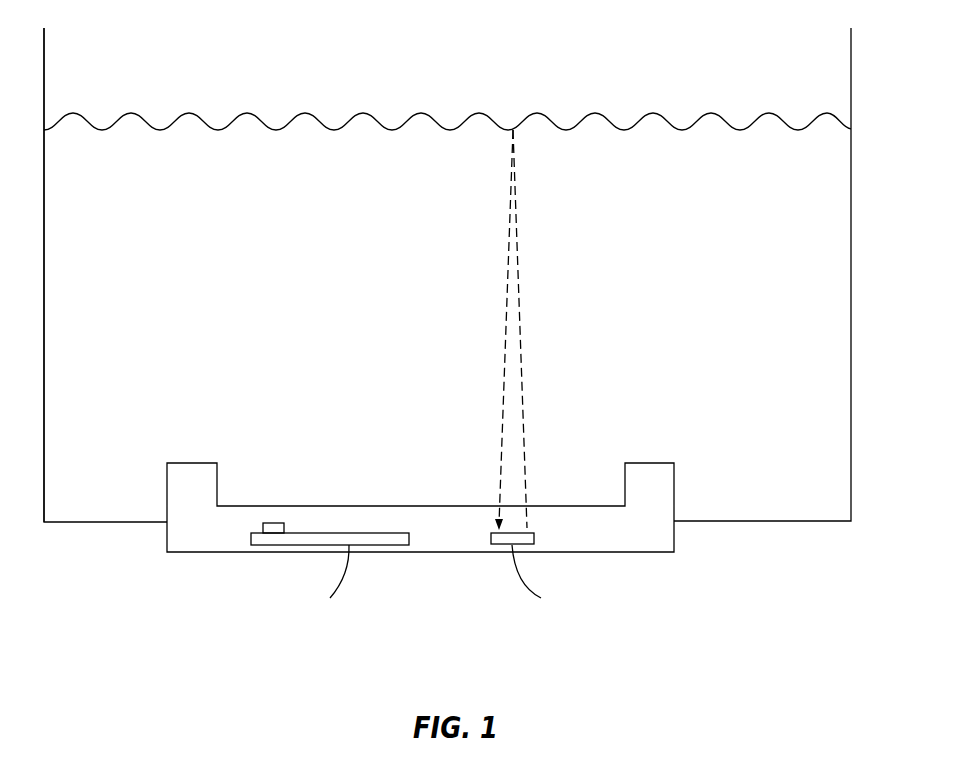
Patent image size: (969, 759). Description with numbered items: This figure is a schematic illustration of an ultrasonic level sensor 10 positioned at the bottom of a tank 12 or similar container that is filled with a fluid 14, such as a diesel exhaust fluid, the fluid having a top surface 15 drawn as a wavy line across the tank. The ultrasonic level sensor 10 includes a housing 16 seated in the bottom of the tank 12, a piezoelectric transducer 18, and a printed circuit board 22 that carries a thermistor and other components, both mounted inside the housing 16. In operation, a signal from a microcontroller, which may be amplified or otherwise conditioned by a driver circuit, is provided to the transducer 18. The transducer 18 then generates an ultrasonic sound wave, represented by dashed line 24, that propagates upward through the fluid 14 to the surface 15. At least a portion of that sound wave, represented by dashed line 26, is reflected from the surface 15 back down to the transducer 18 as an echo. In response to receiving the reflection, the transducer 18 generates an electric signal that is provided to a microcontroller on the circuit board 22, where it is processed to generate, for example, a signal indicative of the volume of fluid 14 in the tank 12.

The ultrasonic level sensor 10 is at (571, 430).
The tank 12 is at (851, 228).
The fluid 14 is at (737, 211).
The top surface 15 is at (657, 111).
The housing 16 is at (675, 535).
The piezoelectric transducer 18 is at (490, 538).
The printed circuit board 22 is at (322, 533).
The sound wave 24 is at (522, 328).
The reflected sound wave 26 is at (503, 310).